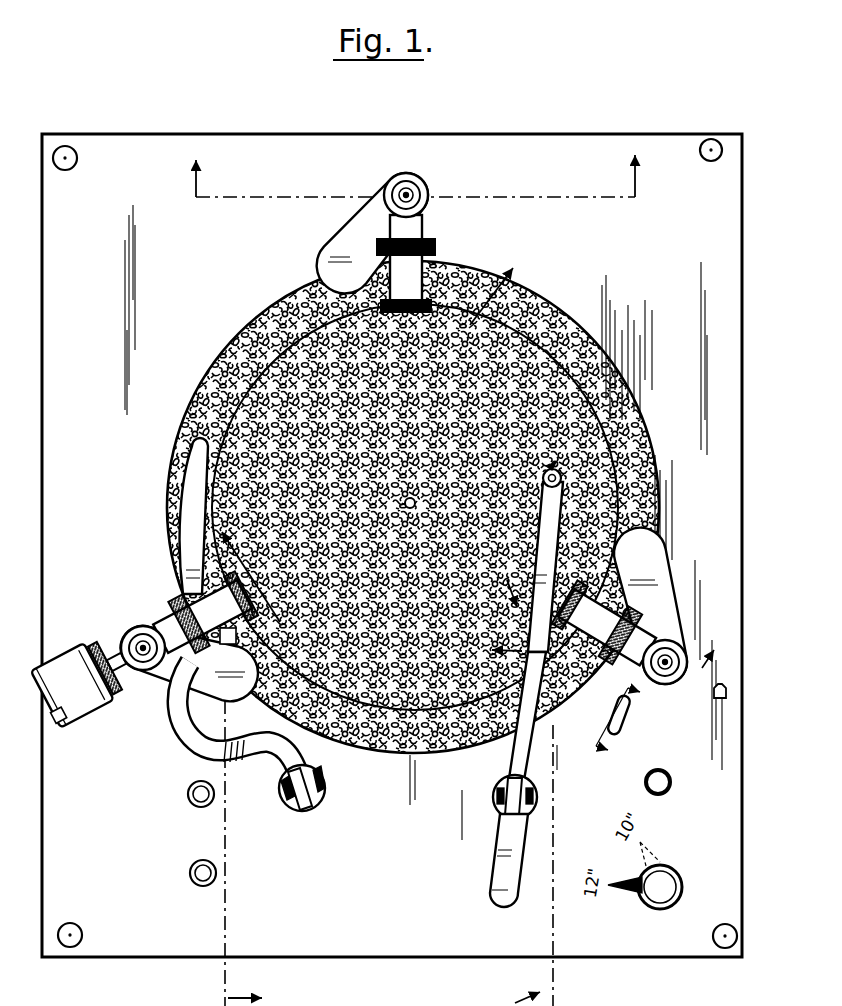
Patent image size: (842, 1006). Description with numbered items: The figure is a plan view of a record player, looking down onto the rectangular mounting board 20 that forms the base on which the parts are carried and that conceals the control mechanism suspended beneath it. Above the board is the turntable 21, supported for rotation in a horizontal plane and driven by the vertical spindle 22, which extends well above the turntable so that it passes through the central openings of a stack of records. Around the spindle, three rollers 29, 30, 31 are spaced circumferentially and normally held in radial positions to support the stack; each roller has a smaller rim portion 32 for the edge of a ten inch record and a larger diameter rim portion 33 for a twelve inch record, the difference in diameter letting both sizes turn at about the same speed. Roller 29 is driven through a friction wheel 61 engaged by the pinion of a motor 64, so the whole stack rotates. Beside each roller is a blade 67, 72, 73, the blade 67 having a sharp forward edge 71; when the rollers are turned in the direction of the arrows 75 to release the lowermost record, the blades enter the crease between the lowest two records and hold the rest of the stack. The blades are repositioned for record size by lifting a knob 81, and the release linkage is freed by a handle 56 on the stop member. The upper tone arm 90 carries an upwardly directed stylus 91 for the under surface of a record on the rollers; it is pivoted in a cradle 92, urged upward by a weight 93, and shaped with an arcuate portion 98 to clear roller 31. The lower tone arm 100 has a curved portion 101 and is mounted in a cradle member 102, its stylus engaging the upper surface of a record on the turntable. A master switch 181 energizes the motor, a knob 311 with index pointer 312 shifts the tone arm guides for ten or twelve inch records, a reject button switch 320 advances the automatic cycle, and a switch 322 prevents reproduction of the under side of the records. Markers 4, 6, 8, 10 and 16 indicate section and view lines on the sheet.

The section indicator 4 is at (557, 654).
The section indicator 6 is at (228, 636).
The section indicator 8 is at (714, 675).
The section line 10 is at (416, 580).
The section line 16 is at (607, 712).
The mounting board 20 is at (730, 328).
The turntable 21 is at (637, 452).
The spindle 22 is at (416, 502).
The roller 29 is at (195, 598).
The roller 30 is at (428, 266).
The roller 31 is at (604, 627).
The smaller rim portion 32 is at (390, 308).
The larger diameter rim portion 33 is at (425, 248).
The handle 56 is at (632, 722).
The friction wheel 61 is at (110, 640).
The motor 64 is at (88, 718).
The blade 67 is at (235, 688).
The forward edge 71 is at (262, 630).
The blade 72 is at (335, 250).
The blade 73 is at (660, 563).
The arrows 75 is at (369, 445).
The knob 81 is at (410, 182).
The upper tone arm 90 is at (520, 737).
The stylus 91 is at (558, 481).
The cradle 92 is at (538, 800).
The weight 93 is at (494, 868).
The arcuate shaped portion 98 is at (506, 634).
The lower tone arm 100 is at (183, 540).
The curved portion 101 is at (198, 740).
The cradle member 102 is at (326, 788).
The master switch 181 is at (218, 872).
The knob 311 is at (672, 878).
The index pointer 312 is at (640, 890).
The reject button switch 320 is at (652, 780).
The switch 322 is at (215, 795).